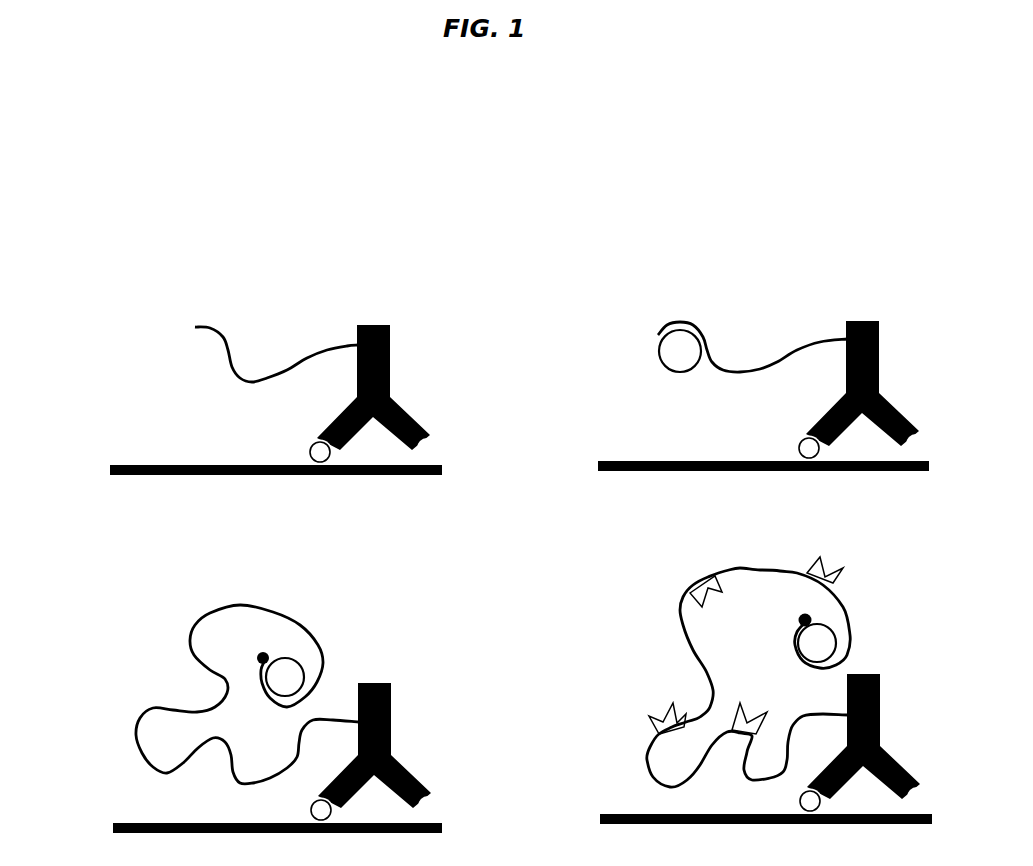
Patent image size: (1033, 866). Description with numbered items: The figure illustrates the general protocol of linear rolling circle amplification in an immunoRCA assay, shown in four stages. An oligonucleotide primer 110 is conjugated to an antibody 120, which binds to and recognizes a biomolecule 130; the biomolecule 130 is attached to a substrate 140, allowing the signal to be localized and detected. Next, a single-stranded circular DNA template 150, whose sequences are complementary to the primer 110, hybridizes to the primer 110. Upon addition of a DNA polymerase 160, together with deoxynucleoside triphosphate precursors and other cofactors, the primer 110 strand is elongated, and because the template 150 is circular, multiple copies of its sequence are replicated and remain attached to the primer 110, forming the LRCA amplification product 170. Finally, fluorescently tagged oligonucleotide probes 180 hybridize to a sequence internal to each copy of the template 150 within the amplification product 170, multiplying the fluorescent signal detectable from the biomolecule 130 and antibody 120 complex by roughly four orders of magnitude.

The oligonucleotide primer 110 is at (177, 328).
The antibody 120 is at (404, 352).
The biomolecule 130 is at (296, 444).
The substrate 140 is at (98, 469).
The single-stranded circular DNA template 150 is at (752, 347).
The DNA polymerase 160 is at (251, 648).
The LRCA amplification product 170 is at (863, 609).
The fluorescently tagged oligonucleotide probe 180 is at (657, 706).